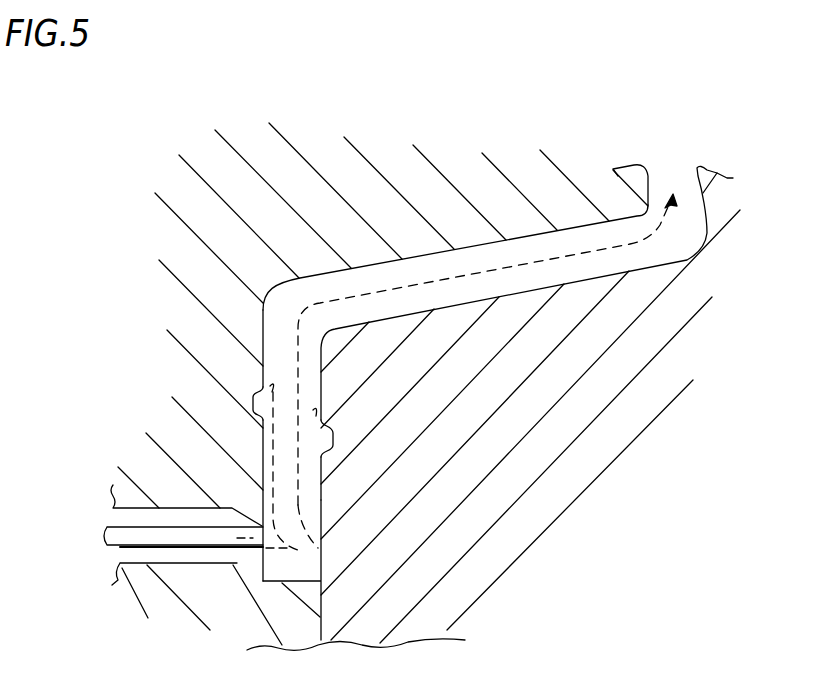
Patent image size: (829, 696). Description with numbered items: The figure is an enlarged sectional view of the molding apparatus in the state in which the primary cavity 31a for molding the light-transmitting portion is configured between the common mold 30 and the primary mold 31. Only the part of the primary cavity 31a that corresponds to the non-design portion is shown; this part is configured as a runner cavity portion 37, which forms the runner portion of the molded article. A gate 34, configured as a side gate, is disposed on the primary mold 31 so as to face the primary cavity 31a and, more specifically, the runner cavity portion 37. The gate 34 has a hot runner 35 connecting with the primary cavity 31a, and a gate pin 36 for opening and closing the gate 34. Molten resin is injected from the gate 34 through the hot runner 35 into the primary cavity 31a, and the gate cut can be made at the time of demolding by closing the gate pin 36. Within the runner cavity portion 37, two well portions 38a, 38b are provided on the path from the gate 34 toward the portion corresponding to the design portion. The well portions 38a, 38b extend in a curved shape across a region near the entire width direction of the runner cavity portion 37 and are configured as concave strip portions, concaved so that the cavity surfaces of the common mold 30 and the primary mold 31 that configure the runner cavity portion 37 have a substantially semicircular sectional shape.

The common mold 30 is at (580, 462).
The primary mold 31 is at (273, 163).
The primary cavity 31a is at (523, 232).
The gate 34 is at (257, 548).
The hot runner 35 is at (199, 563).
The gate pin 36 is at (112, 515).
The runner cavity portion 37 is at (323, 560).
The well portion 38a is at (333, 437).
The well portion 38b is at (253, 397).